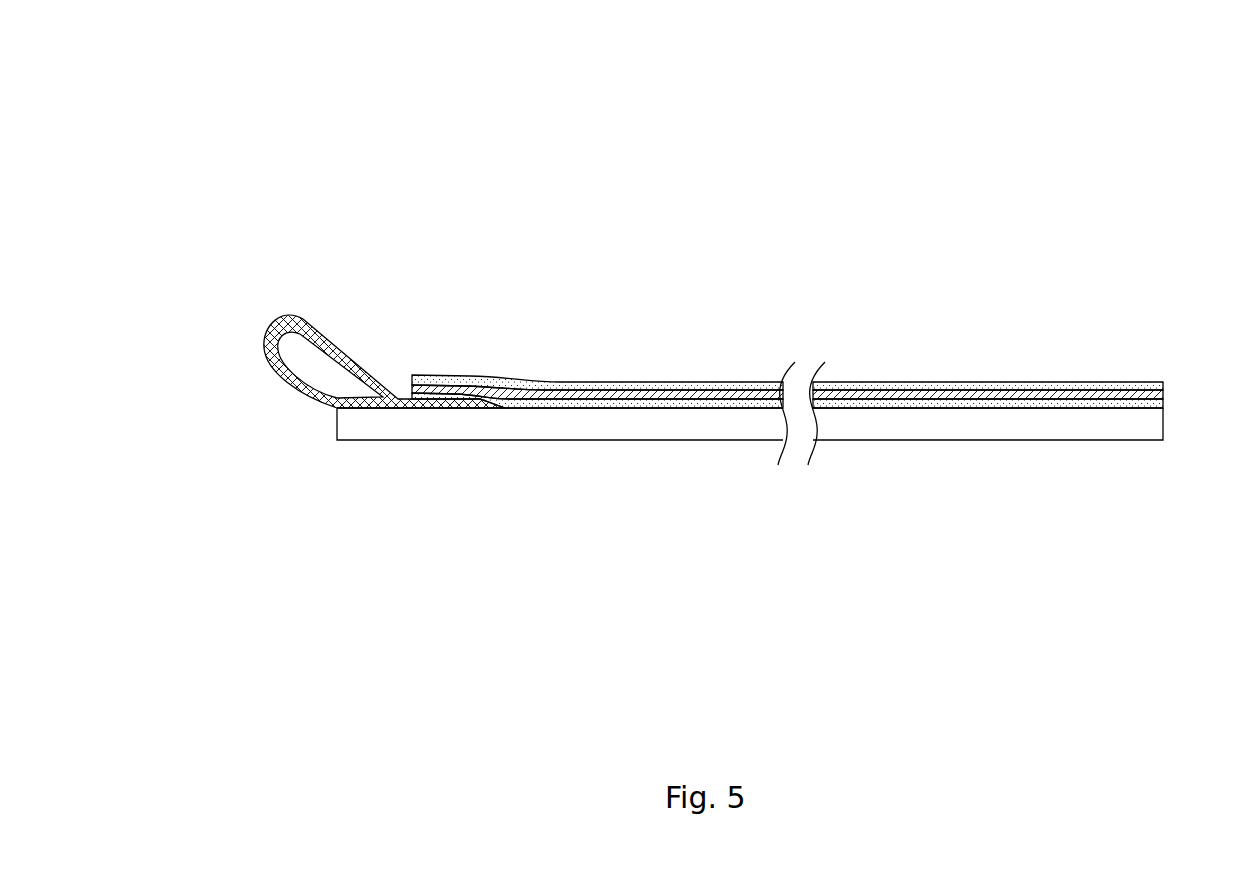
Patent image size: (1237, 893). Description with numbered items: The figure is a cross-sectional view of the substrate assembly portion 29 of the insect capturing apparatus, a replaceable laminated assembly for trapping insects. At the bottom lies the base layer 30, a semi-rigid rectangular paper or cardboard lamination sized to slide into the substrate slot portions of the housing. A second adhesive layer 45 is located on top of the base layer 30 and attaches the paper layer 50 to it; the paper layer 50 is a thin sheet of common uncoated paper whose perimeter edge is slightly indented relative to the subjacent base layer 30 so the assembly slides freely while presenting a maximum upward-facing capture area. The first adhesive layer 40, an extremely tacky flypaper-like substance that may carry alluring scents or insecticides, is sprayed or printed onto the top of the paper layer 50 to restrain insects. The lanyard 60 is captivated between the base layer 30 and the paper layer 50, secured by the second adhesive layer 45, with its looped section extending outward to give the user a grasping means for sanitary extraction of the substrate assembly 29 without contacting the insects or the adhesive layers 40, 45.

The substrate assembly portion 29 is at (248, 129).
The base layer 30 is at (408, 428).
The first adhesive layer 40 is at (620, 380).
The second adhesive layer 45 is at (570, 408).
The paper layer 50 is at (455, 387).
The lanyard 60 is at (305, 318).